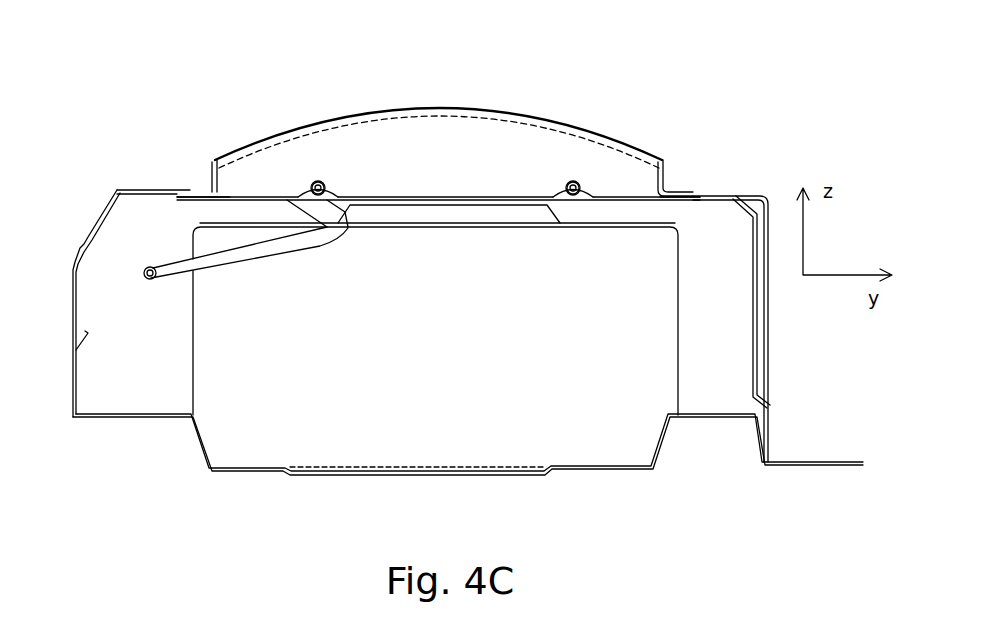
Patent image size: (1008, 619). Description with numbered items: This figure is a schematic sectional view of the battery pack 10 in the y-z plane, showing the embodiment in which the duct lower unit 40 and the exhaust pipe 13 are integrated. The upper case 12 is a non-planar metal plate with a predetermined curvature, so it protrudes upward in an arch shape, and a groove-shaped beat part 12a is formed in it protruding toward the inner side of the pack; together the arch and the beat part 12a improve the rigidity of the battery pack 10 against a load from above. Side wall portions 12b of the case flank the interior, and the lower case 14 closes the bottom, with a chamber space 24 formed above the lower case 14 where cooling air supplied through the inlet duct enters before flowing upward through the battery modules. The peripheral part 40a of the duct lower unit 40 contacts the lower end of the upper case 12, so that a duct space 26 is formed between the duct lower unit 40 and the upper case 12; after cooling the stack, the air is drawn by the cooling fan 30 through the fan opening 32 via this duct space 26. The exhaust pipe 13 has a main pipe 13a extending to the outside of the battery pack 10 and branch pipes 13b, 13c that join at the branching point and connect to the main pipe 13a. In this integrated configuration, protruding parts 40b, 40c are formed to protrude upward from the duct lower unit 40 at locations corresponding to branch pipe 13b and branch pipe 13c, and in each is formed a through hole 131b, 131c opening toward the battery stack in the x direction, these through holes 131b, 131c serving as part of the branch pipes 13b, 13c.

The battery pack 10 is at (712, 116).
The upper case 12 is at (363, 113).
The beat part 12a is at (497, 115).
The side wall 12b is at (187, 190).
The exhaust pipe 13 is at (318, 242).
The main pipe 13a is at (250, 258).
The branch pipe 13b is at (540, 213).
The branch pipe 13c is at (357, 222).
The lower case 14 is at (383, 474).
The chamber space 24 is at (533, 448).
The duct space 26 is at (548, 158).
The cooling fan 30 is at (668, 322).
The fan opening 32 is at (443, 232).
The duct lower unit 40 is at (230, 190).
The peripheral part 40a is at (183, 203).
The protruding part 40b is at (560, 190).
The protruding part 40c is at (333, 187).
The through hole 131b is at (580, 185).
The through hole 131c is at (322, 183).